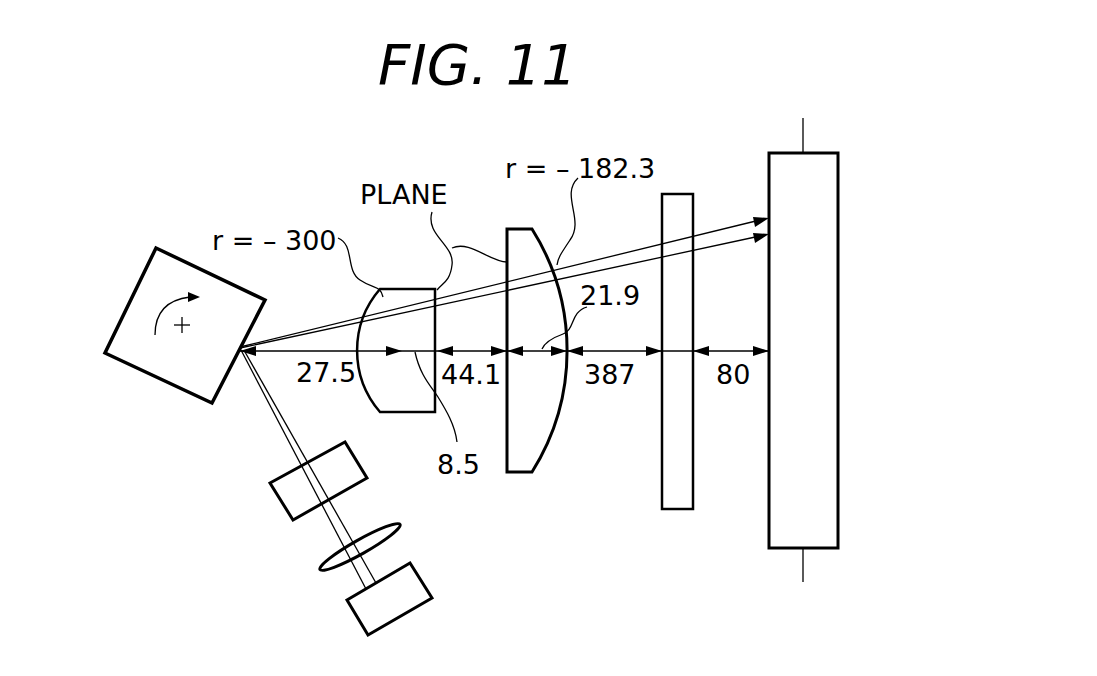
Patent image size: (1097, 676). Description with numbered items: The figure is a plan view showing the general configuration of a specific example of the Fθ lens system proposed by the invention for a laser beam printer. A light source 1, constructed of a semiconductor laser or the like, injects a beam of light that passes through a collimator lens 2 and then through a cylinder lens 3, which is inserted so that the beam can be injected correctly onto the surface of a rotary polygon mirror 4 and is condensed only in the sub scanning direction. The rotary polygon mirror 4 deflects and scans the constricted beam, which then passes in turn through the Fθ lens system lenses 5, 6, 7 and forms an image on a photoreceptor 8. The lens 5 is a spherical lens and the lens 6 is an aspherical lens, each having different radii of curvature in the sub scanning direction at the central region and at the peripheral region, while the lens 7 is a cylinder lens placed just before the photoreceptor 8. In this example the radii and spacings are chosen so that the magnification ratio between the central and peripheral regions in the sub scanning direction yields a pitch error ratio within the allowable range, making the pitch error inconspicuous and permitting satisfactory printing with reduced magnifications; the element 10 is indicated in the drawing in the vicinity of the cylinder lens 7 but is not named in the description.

The light source 1 is at (352, 612).
The collimator lens 2 is at (323, 568).
The cylinder lens 3 is at (280, 500).
The rotary polygon mirror 4 is at (160, 382).
The spherical lens 5 is at (400, 413).
The aspherical lens 6 is at (510, 473).
The cylinder lens 7 is at (675, 510).
The photoreceptor 8 is at (777, 549).
The plate thickness element 10 is at (677, 350).